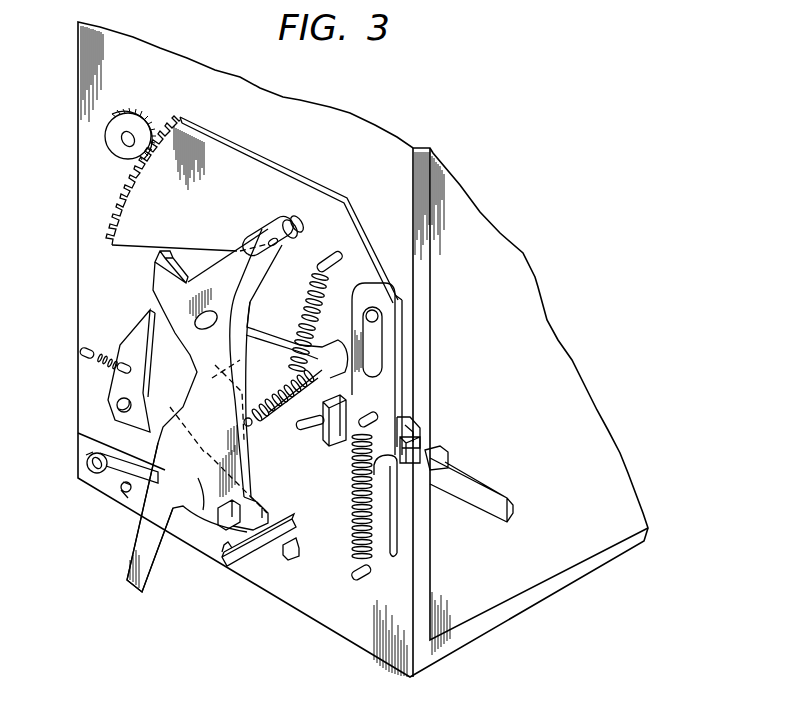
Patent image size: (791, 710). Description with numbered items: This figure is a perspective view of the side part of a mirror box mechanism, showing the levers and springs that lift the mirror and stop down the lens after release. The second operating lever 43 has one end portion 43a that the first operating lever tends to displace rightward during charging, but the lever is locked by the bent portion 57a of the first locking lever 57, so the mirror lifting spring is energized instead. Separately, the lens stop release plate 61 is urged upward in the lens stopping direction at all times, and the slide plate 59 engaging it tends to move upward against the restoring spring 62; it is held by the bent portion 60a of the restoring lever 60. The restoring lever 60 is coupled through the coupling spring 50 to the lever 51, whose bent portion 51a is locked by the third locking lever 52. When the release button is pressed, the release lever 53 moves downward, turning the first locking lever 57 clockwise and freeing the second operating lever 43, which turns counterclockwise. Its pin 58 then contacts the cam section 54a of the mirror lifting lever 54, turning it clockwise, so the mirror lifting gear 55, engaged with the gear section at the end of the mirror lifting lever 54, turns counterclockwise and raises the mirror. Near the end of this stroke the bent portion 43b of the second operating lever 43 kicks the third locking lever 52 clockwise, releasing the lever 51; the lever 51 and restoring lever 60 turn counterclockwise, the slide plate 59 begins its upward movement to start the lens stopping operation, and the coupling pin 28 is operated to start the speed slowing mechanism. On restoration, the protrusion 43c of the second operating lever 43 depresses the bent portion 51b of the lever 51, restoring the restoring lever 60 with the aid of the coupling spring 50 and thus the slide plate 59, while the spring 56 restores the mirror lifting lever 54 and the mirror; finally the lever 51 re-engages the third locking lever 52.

The coupling pin 28 is at (298, 432).
The second operating lever 43 is at (200, 508).
The one end portion of the second operating lever 43a is at (127, 572).
The bent portion of the second operating lever 43b is at (155, 263).
The protrusion of the second operating lever 43c is at (103, 480).
The coupling spring 50 is at (256, 418).
The lever 51 is at (262, 372).
The bent portion of the lever 51a is at (250, 462).
The bent portion of the lever 51b is at (118, 402).
The third locking lever 52 is at (145, 318).
The release lever 53 is at (240, 565).
The mirror lifting lever 54 is at (222, 158).
The cam section of the mirror lifting lever 54a is at (290, 221).
The mirror lifting gear 55 is at (110, 135).
The spring 56 is at (313, 294).
The first locking lever 57 is at (288, 553).
The bent portion of the first locking lever 57a is at (242, 522).
The pin 58 is at (303, 229).
The slide plate 59 is at (385, 385).
The restoring lever 60 is at (417, 427).
The bent portion of the restoring lever 60a is at (422, 442).
The lens stop release plate 61 is at (500, 492).
The restoring spring 62 is at (374, 540).